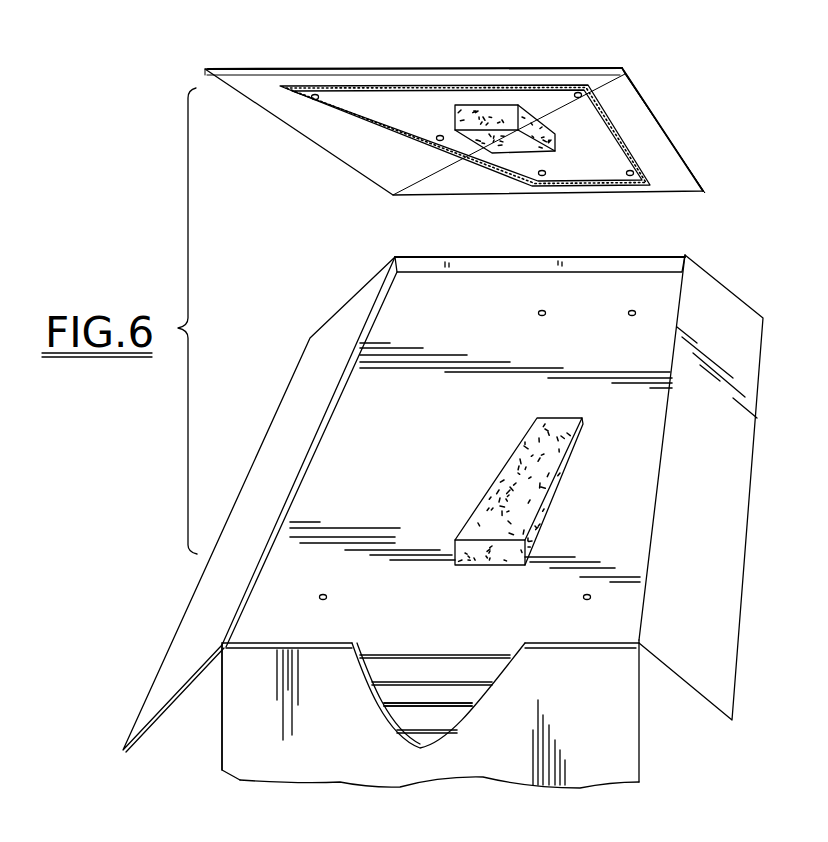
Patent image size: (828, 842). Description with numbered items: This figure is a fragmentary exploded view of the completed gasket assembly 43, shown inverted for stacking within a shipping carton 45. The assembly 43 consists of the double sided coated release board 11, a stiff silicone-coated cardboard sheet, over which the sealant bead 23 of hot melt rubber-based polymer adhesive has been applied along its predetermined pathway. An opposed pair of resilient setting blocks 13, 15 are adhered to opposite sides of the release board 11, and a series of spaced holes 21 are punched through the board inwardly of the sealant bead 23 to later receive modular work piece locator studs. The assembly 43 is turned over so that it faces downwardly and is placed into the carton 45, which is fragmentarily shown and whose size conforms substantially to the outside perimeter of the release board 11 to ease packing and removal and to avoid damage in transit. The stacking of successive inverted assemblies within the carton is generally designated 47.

The coated release board 11 is at (572, 68).
The setting block 13 is at (518, 147).
The setting block 15 is at (578, 447).
The spaced holes 21 is at (437, 140).
The sealant bead 23 is at (428, 85).
The gasket assembly 43 is at (648, 90).
The carton 45 is at (222, 750).
The stacking 47 is at (450, 700).